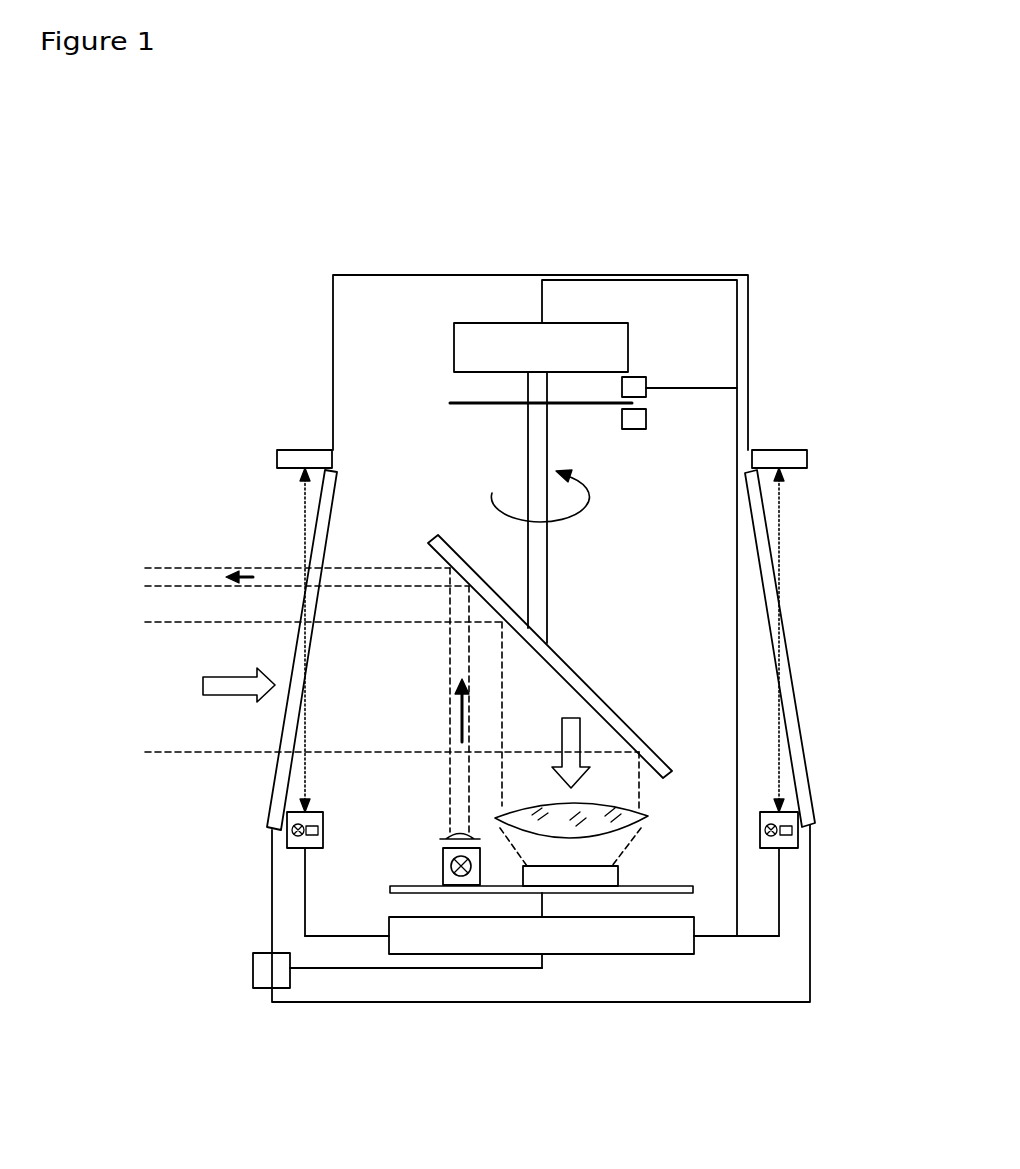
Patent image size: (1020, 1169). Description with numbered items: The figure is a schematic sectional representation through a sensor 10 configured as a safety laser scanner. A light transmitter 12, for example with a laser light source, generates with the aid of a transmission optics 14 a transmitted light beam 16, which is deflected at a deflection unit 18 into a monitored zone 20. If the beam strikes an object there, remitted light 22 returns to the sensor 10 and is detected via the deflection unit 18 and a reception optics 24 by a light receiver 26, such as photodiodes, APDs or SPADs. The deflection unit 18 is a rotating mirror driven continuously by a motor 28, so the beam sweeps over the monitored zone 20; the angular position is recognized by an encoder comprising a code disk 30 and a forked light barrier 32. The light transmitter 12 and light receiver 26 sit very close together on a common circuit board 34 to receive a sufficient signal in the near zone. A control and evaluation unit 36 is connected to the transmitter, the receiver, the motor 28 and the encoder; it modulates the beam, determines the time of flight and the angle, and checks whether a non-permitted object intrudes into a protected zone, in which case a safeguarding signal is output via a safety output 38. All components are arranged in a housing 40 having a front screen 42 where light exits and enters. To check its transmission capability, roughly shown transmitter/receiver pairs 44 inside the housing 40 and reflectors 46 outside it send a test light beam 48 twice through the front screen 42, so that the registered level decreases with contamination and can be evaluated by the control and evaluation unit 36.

The sensor 10 is at (773, 240).
The light transmitter 12 is at (440, 860).
The transmission optics 14 is at (445, 836).
The transmitted light beam 16 is at (196, 580).
The deflection unit 18 is at (428, 540).
The monitored zone 20 is at (18, 562).
The remitted light 22 is at (188, 708).
The reception optics 24 is at (620, 824).
The light receiver 26 is at (606, 882).
The motor 28 is at (485, 362).
The code disk 30 is at (450, 403).
The forked light barrier 32 is at (645, 394).
The common circuit board 34 is at (690, 893).
The control and evaluation unit 36 is at (642, 944).
The safety output 38 is at (253, 960).
The housing 40 is at (810, 955).
The front screen 42 is at (268, 778).
The transmitter/receiver pair 44 is at (296, 845).
The reflector 46 is at (313, 460).
The test light beam 48 is at (300, 528).